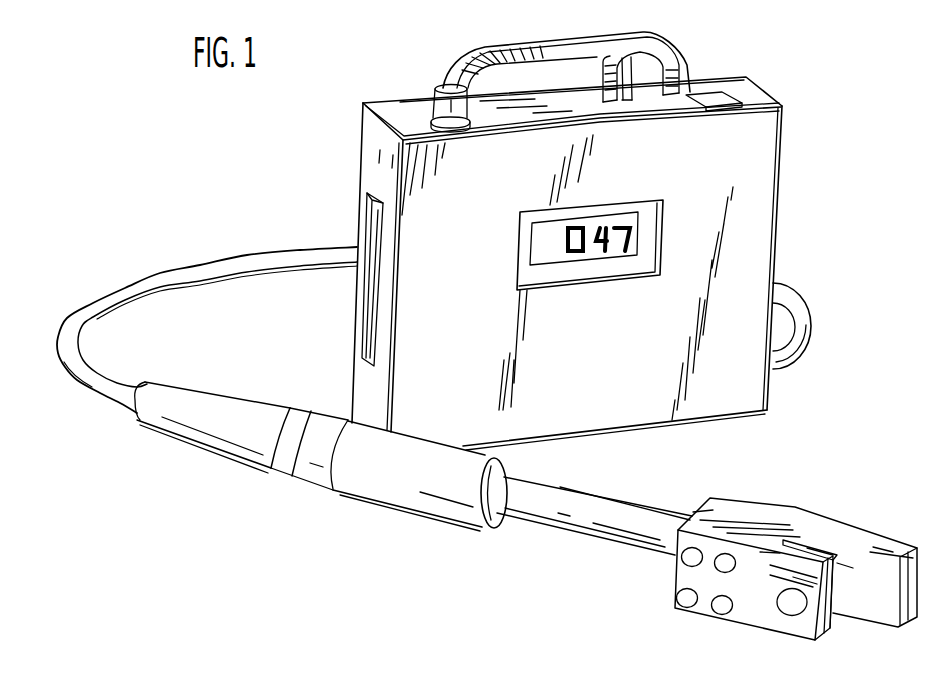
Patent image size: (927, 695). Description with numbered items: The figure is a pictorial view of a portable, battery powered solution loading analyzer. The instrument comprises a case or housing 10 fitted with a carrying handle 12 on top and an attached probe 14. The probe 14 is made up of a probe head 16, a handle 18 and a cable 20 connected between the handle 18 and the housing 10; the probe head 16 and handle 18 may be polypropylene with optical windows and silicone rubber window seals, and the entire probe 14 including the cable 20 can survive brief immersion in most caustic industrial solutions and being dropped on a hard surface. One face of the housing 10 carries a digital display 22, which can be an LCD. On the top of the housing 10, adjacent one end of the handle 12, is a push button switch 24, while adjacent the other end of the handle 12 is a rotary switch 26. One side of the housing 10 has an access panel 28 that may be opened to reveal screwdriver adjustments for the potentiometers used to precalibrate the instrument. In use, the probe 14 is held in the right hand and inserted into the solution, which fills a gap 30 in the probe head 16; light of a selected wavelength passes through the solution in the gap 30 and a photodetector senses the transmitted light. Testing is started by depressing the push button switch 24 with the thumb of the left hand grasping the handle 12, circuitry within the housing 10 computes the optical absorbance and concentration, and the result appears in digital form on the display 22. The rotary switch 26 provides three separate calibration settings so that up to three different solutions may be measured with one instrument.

The housing 10 is at (781, 178).
The carrying handle 12 is at (527, 42).
The probe 14 is at (740, 480).
The probe head 16 is at (772, 615).
The handle 18 is at (430, 518).
The cable 20 is at (248, 250).
The digital display 22 is at (654, 238).
The push button switch 24 is at (712, 95).
The rotary switch 26 is at (442, 86).
The access panel 28 is at (367, 295).
The gap 30 is at (837, 623).